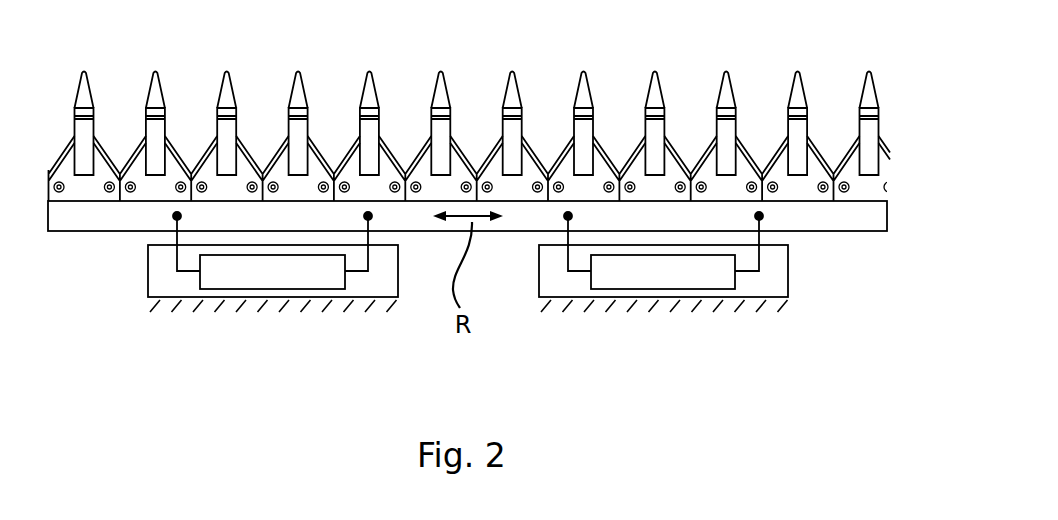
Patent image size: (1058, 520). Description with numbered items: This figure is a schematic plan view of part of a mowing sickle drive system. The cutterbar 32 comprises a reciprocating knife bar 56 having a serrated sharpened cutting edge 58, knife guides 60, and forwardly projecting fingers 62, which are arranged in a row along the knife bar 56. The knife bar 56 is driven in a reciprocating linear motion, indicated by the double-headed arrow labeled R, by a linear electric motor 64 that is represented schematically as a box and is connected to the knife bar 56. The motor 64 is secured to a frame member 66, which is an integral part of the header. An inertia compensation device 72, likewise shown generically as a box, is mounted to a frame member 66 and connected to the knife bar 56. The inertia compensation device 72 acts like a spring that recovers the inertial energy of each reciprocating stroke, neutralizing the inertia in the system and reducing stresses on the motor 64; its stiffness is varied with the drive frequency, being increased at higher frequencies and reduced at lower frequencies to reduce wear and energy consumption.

The cutterbar 32 is at (897, 138).
The knife bar 56 is at (882, 192).
The serrated sharpened cutting edge 58 is at (317, 148).
The knife guides 60 is at (293, 147).
The forwardly projecting fingers 62 is at (448, 107).
The linear electric motor 64 is at (313, 290).
The frame member 66 is at (147, 278).
The inertia compensation device 72 is at (707, 290).